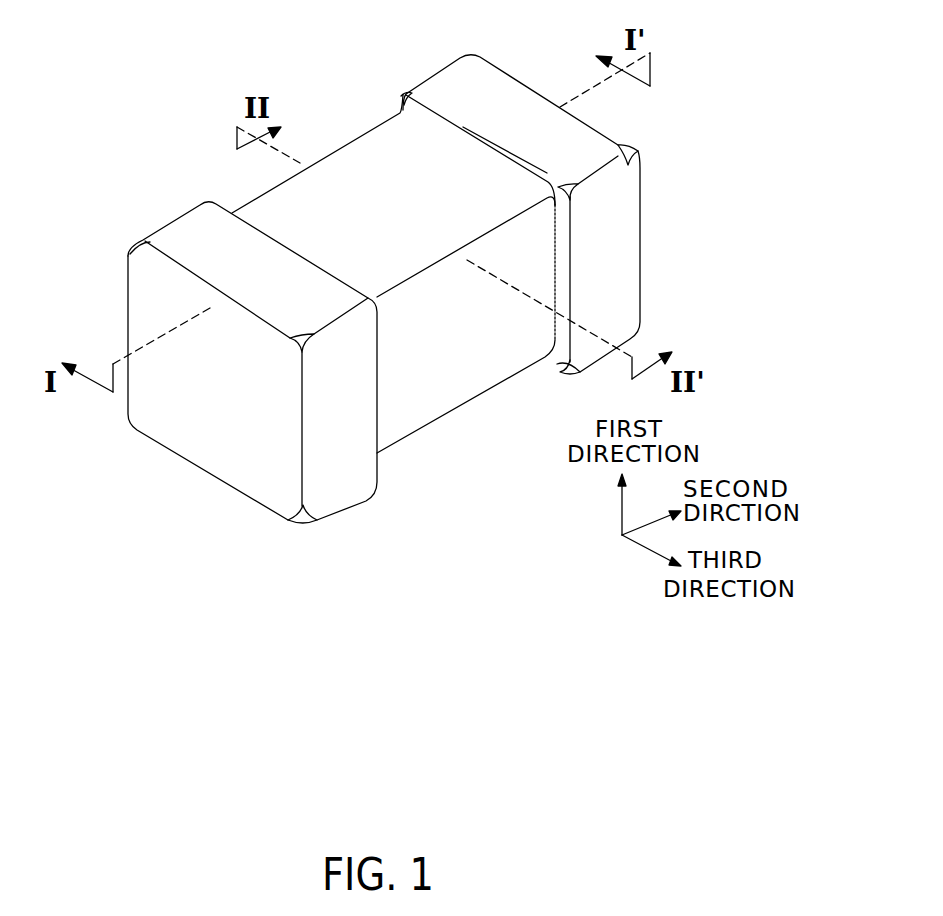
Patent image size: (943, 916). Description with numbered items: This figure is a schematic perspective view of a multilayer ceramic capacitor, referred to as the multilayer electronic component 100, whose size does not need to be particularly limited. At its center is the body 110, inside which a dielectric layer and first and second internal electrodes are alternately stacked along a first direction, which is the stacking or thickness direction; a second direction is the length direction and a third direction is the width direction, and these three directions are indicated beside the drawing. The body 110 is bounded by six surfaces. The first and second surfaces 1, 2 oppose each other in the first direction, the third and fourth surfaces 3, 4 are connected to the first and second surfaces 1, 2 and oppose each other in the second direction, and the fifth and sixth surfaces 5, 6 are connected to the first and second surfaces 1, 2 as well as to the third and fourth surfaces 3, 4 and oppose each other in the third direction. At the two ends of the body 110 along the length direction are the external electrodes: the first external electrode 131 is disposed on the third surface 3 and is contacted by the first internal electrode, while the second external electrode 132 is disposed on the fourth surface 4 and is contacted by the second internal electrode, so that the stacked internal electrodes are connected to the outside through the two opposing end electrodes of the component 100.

The multilayer electronic component 100 is at (172, 27).
The body 110 is at (263, 222).
The first surface 1 is at (428, 380).
The second surface 2 is at (399, 166).
The third surface 3 is at (220, 428).
The fourth surface 4 is at (600, 228).
The fifth surface 5 is at (487, 352).
The sixth surface 6 is at (345, 190).
The first external electrode 131 is at (187, 235).
The second external electrode 132 is at (443, 92).